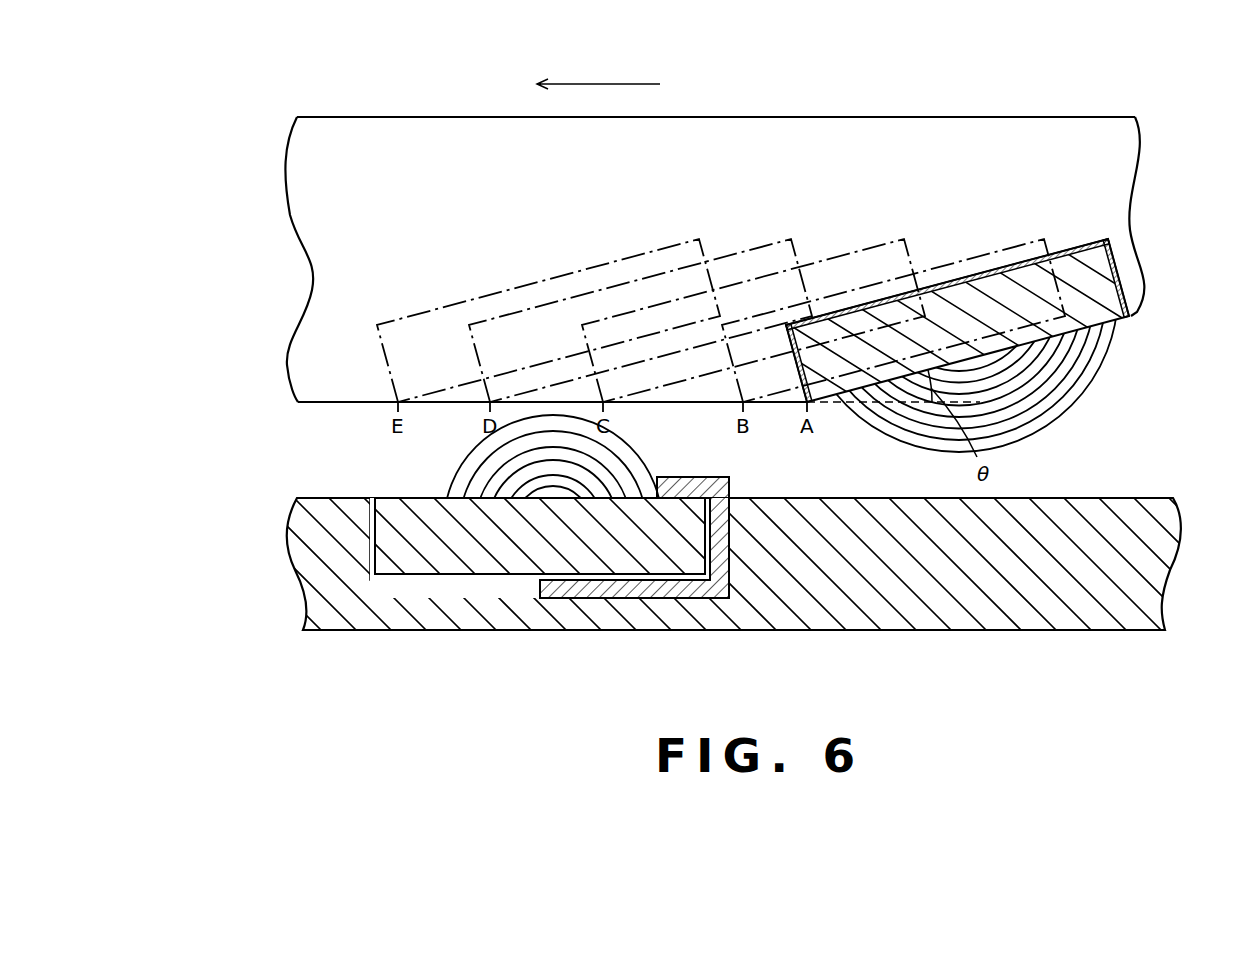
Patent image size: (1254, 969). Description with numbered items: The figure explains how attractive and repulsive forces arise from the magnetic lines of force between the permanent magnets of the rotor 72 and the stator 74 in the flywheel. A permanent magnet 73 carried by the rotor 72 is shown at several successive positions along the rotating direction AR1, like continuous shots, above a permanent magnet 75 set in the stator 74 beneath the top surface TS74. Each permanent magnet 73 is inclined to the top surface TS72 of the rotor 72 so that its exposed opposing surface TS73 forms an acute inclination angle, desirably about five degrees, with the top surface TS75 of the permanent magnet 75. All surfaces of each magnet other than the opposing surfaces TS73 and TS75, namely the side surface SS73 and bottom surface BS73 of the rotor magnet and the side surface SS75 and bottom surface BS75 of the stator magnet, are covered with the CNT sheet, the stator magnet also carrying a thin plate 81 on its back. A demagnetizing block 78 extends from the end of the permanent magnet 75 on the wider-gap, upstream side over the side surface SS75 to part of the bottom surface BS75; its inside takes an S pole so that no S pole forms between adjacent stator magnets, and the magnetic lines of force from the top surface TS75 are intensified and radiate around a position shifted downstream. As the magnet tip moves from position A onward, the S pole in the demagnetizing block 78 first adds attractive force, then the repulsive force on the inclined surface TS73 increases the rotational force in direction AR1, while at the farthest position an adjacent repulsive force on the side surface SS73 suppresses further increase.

The rotor 72 is at (838, 152).
The permanent magnet 73 is at (1092, 258).
The stator 74 is at (906, 602).
The permanent magnet 75 is at (431, 553).
The demagnetizing block 78 is at (661, 590).
The yoke plate 81 is at (1028, 268).
The CNT sheet CNT is at (1122, 252).
The top surface TS72 is at (289, 423).
The opposing surface TS73 is at (1142, 353).
The bottom surface BS73 is at (925, 249).
The side surface SS73 is at (1175, 293).
The top surface of base TS74 is at (1129, 474).
The opposing surface TS75 is at (374, 476).
The bottom surface BS75 is at (527, 634).
The side surface SS75 is at (293, 555).
The rotating direction AR1 is at (598, 70).